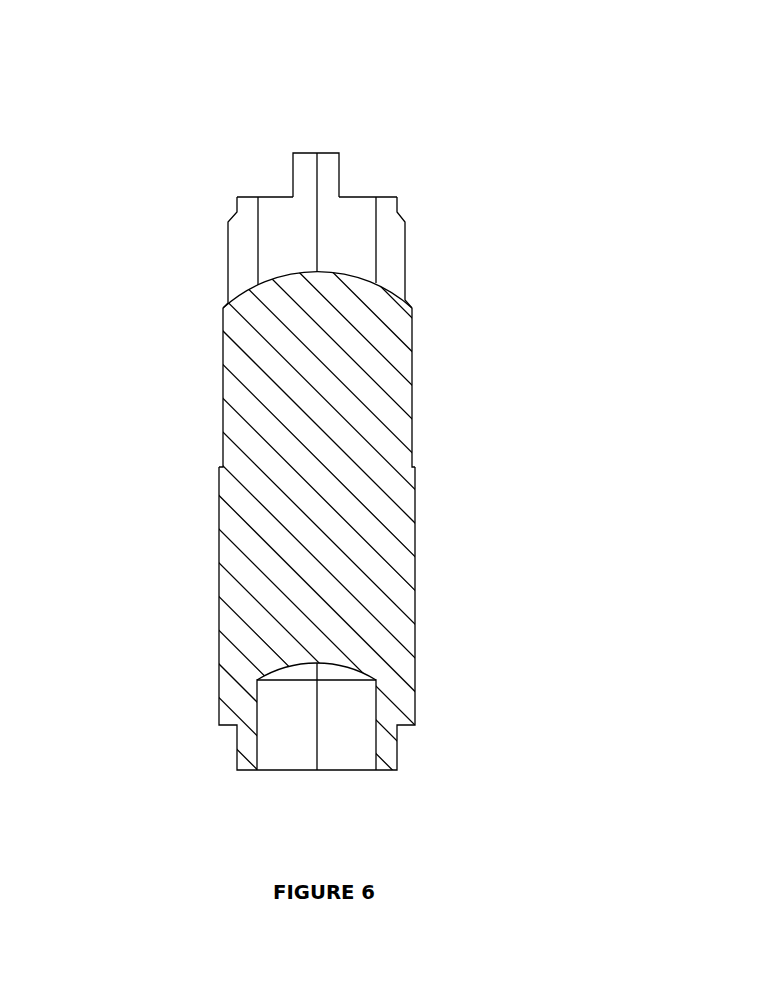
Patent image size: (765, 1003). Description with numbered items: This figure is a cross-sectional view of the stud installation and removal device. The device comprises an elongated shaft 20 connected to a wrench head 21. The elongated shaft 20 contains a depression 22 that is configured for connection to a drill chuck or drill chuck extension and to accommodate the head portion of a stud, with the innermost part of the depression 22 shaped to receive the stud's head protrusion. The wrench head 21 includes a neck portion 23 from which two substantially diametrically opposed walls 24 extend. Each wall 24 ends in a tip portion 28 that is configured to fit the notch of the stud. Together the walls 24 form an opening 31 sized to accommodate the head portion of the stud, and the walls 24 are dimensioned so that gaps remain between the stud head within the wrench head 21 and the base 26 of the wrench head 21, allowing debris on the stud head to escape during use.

The elongated shaft 20 is at (382, 545).
The wrench head 21 is at (333, 390).
The depression 22 is at (292, 720).
The neck portion 23 is at (278, 378).
The wall 24 is at (243, 269).
The base 26 is at (325, 268).
The tip portion 28 is at (308, 172).
The opening 31 is at (278, 228).